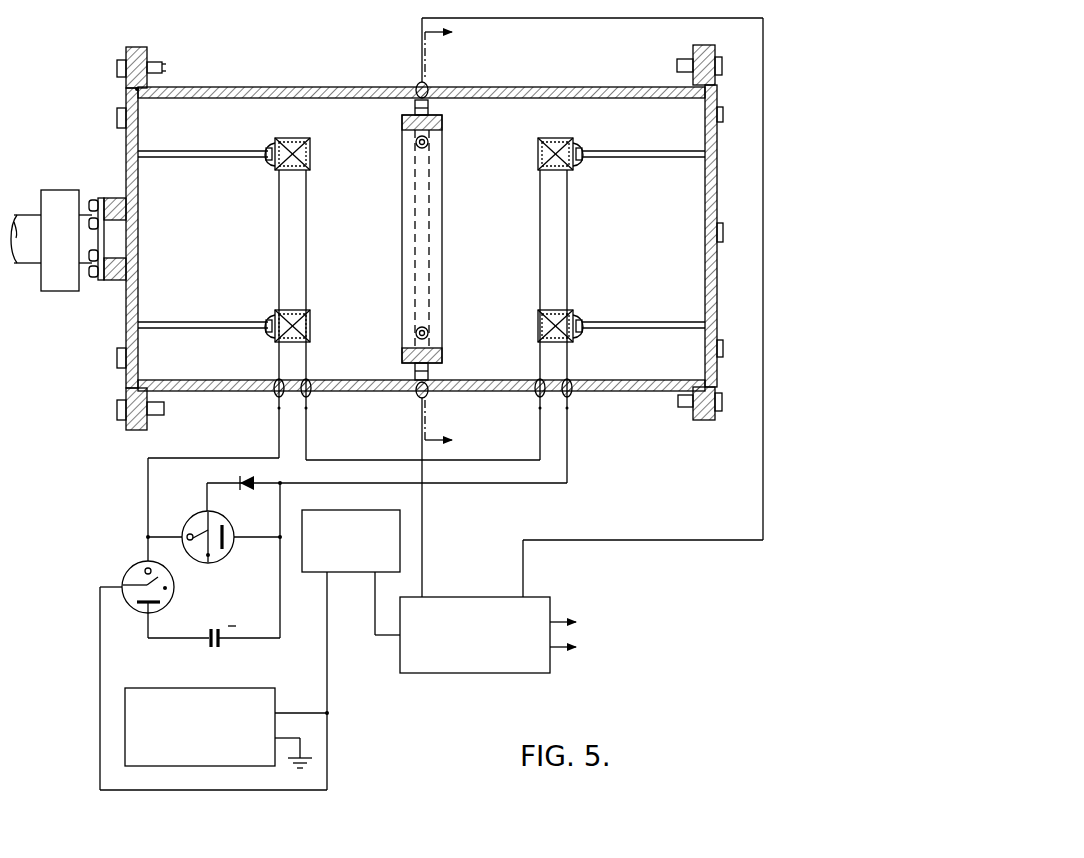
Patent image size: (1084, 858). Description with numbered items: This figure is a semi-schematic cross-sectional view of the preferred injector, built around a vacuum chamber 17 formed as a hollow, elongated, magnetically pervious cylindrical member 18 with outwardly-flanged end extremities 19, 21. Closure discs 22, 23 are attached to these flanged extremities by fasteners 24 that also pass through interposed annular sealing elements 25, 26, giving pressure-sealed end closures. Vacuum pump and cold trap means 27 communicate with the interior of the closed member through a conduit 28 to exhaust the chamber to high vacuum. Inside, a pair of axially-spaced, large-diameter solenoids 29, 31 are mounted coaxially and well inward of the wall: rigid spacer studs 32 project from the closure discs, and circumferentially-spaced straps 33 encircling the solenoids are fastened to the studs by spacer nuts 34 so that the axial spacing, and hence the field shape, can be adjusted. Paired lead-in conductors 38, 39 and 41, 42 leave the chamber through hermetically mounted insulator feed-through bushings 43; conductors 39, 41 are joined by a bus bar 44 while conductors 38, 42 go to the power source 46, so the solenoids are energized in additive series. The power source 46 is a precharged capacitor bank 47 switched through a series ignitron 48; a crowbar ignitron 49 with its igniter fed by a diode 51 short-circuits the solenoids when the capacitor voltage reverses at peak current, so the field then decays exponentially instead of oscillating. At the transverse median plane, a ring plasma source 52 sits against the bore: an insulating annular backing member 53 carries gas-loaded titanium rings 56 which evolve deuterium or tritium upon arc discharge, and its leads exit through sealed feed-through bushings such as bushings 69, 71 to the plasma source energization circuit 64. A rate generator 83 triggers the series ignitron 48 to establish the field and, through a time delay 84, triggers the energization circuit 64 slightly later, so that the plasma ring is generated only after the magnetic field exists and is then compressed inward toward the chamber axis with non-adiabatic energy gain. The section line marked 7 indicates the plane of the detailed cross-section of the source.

The section line 7- 7 is at (438, 236).
The vacuum chamber 17 is at (277, 58).
The cylindrical member 18 is at (543, 87).
The outwardly-flanged end extremity 19 is at (146, 54).
The outwardly-flanged end extremity 21 is at (693, 55).
The closure disc 22 is at (127, 385).
The closure disc 23 is at (717, 192).
The fasteners 24 is at (117, 68).
The annular sealing element 25 is at (138, 91).
The annular sealing element 26 is at (703, 381).
The vacuum pump and cold trap means 27 is at (61, 190).
The conduit 28 is at (92, 272).
The solenoid 29 is at (310, 156).
The solenoid 31 is at (538, 156).
The spacer studs 32 is at (212, 322).
The straps 33 is at (271, 166).
The spacer nuts 34 is at (268, 146).
The lead-in conductor 38 is at (279, 355).
The lead-in conductor 39 is at (306, 356).
The lead-in conductor 41 is at (540, 355).
The lead-in conductor 42 is at (567, 356).
The insulator feed-through bushings 43 is at (274, 395).
The bus bar 44 is at (368, 462).
The power source 46 is at (115, 536).
The capacitor bank 47 is at (214, 650).
The series ignitron 48 is at (175, 600).
The ignitron 49 is at (193, 515).
The diode 51 is at (247, 490).
The ring plasma source 52 is at (392, 242).
The annular backing member 53 is at (443, 124).
The titanium rings 56 is at (430, 333).
The plasma source energization circuit 64 is at (467, 674).
The feed-through bushing 69 is at (415, 396).
The feed-through bushing 71 is at (414, 87).
The rate generator 83 is at (258, 688).
The time delay 84 is at (400, 546).